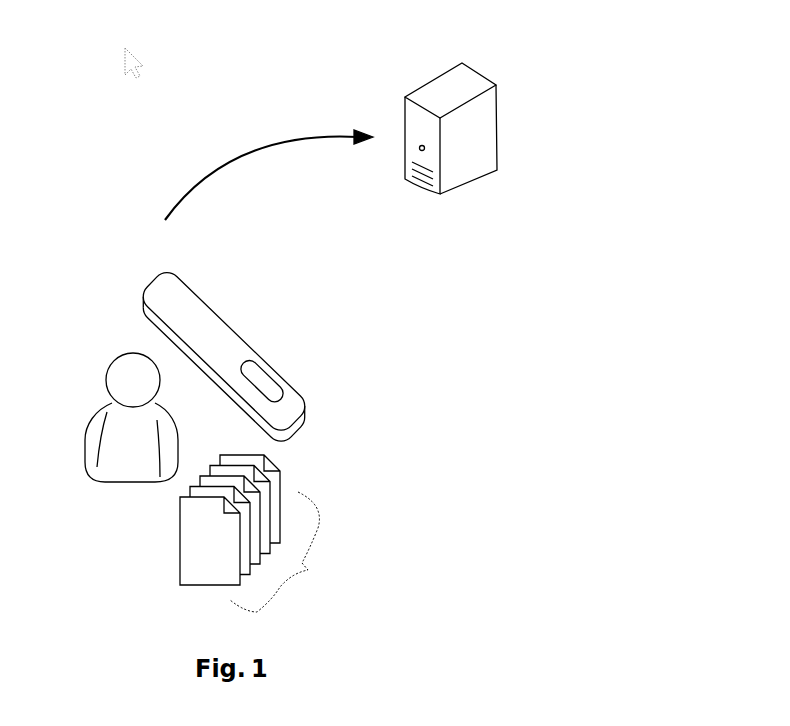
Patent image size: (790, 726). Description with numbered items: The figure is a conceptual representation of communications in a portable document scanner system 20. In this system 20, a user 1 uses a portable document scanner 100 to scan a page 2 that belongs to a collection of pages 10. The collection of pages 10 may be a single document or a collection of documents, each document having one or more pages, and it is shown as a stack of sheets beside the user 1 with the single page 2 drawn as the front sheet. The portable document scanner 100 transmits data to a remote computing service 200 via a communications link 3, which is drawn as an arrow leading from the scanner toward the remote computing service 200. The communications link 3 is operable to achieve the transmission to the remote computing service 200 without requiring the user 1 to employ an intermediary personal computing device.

The system 20 is at (127, 75).
The communications link 3 is at (280, 140).
The remote computing service 200 is at (460, 62).
The portable document scanner 100 is at (240, 332).
The user 1 is at (113, 362).
The page 2 is at (181, 525).
The collection of pages 10 is at (308, 570).